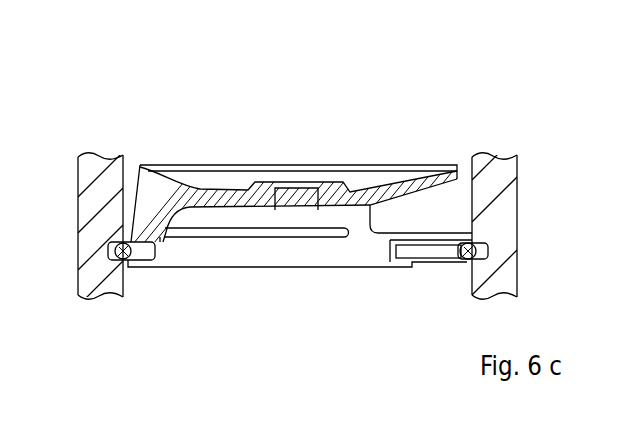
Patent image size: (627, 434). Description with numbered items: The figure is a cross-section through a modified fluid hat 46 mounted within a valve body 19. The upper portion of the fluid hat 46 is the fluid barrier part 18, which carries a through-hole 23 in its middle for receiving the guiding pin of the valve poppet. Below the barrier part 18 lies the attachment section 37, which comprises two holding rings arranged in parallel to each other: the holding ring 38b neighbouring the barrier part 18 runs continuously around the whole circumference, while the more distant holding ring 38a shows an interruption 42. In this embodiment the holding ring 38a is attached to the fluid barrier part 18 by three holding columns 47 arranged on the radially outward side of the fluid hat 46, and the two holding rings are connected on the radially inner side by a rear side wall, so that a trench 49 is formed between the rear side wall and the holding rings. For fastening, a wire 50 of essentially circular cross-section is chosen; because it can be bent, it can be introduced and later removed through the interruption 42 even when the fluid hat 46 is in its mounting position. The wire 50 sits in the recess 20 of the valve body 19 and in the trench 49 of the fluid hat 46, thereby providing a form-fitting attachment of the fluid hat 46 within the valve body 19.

The fluid barrier part 18 is at (163, 200).
The valve body 19 is at (513, 202).
The recess 20 is at (116, 242).
The through-hole 23 is at (293, 188).
The attachment section 37 is at (488, 165).
The holding ring 38a is at (412, 264).
The holding ring 38b is at (472, 243).
The interruption 42 is at (440, 263).
The fluid hat 46 is at (412, 149).
The holding columns 47 is at (172, 215).
The trench 49 is at (145, 258).
The wire 50 is at (482, 252).